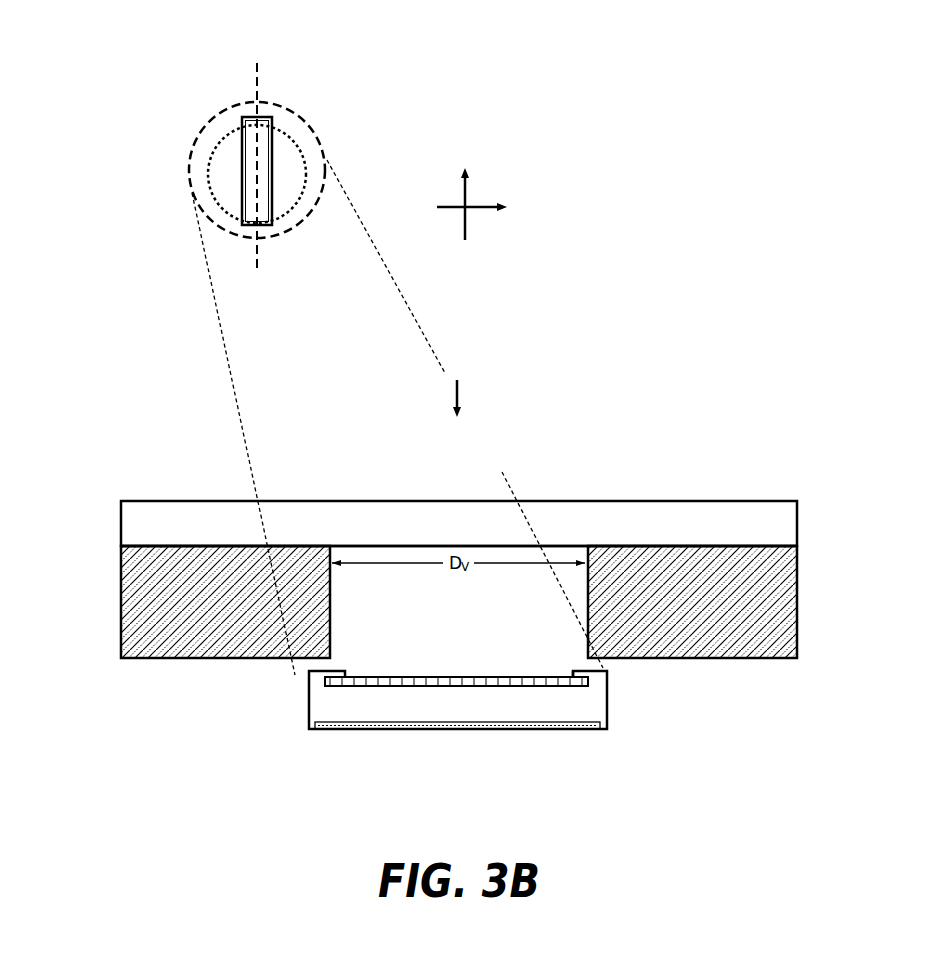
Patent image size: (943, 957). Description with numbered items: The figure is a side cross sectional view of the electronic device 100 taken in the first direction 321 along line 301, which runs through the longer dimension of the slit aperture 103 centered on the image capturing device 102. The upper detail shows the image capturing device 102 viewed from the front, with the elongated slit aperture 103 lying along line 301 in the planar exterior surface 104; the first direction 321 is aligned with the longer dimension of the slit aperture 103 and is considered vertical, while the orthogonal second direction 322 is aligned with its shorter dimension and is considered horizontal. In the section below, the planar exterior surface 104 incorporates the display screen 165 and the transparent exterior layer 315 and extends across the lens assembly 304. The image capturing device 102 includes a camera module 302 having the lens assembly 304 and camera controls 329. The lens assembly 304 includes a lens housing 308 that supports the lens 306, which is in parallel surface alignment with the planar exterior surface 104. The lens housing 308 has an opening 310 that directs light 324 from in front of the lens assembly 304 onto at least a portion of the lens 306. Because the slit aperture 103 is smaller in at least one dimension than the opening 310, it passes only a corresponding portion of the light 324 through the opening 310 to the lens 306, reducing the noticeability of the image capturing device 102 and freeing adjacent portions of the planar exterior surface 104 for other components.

The electronic device 100 is at (104, 531).
The image capturing device 102 is at (200, 100).
The slit aperture 103 is at (264, 151).
The planar exterior surface 104 is at (188, 172).
The display screen 165 is at (178, 610).
The line 301 is at (258, 83).
The camera module 302 is at (545, 714).
The lens assembly 304 is at (301, 701).
The lens 306 is at (287, 183).
The lens housing 308 is at (196, 198).
The opening 310 is at (550, 647).
The transparent exterior layer 315 is at (711, 530).
The first direction 321 is at (468, 225).
The second direction 322 is at (490, 205).
The light 324 is at (462, 395).
The camera controls 329 is at (585, 730).